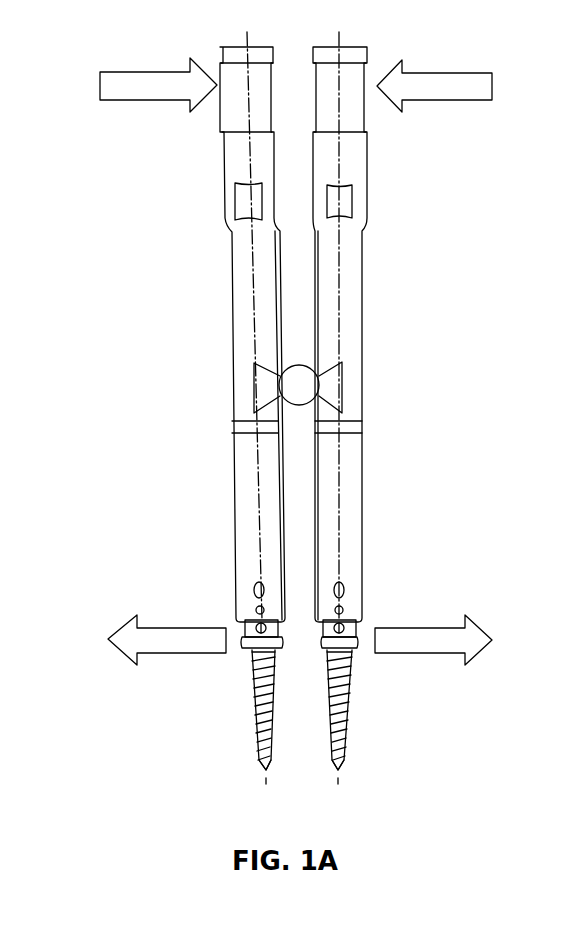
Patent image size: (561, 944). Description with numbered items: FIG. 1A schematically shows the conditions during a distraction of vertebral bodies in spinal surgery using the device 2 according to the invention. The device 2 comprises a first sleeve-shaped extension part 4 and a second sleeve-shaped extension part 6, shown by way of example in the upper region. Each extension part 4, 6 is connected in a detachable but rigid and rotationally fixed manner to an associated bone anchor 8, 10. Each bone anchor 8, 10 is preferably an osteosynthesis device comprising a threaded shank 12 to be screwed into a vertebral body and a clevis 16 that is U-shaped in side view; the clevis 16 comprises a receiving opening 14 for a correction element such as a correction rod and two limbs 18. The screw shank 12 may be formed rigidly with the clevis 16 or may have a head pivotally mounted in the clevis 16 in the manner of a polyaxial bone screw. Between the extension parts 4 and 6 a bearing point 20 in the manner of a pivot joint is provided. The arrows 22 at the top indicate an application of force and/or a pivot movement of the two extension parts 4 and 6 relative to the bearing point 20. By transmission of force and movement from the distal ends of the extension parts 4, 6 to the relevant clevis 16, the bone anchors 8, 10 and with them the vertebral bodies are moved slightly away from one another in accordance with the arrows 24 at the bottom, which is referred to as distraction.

The device 2 is at (427, 281).
The first sleeve-shaped extension part 4 is at (360, 295).
The second sleeve-shaped extension part 6 is at (240, 285).
The bone anchor 8 is at (347, 698).
The bone anchor 10 is at (248, 700).
The threaded shank 12 is at (257, 745).
The receiving opening 14 is at (358, 625).
The clevis 16 is at (322, 636).
The limbs 18 is at (238, 617).
The bearing point 20 is at (298, 407).
The arrows 22 is at (128, 90).
The arrows 24 is at (165, 627).